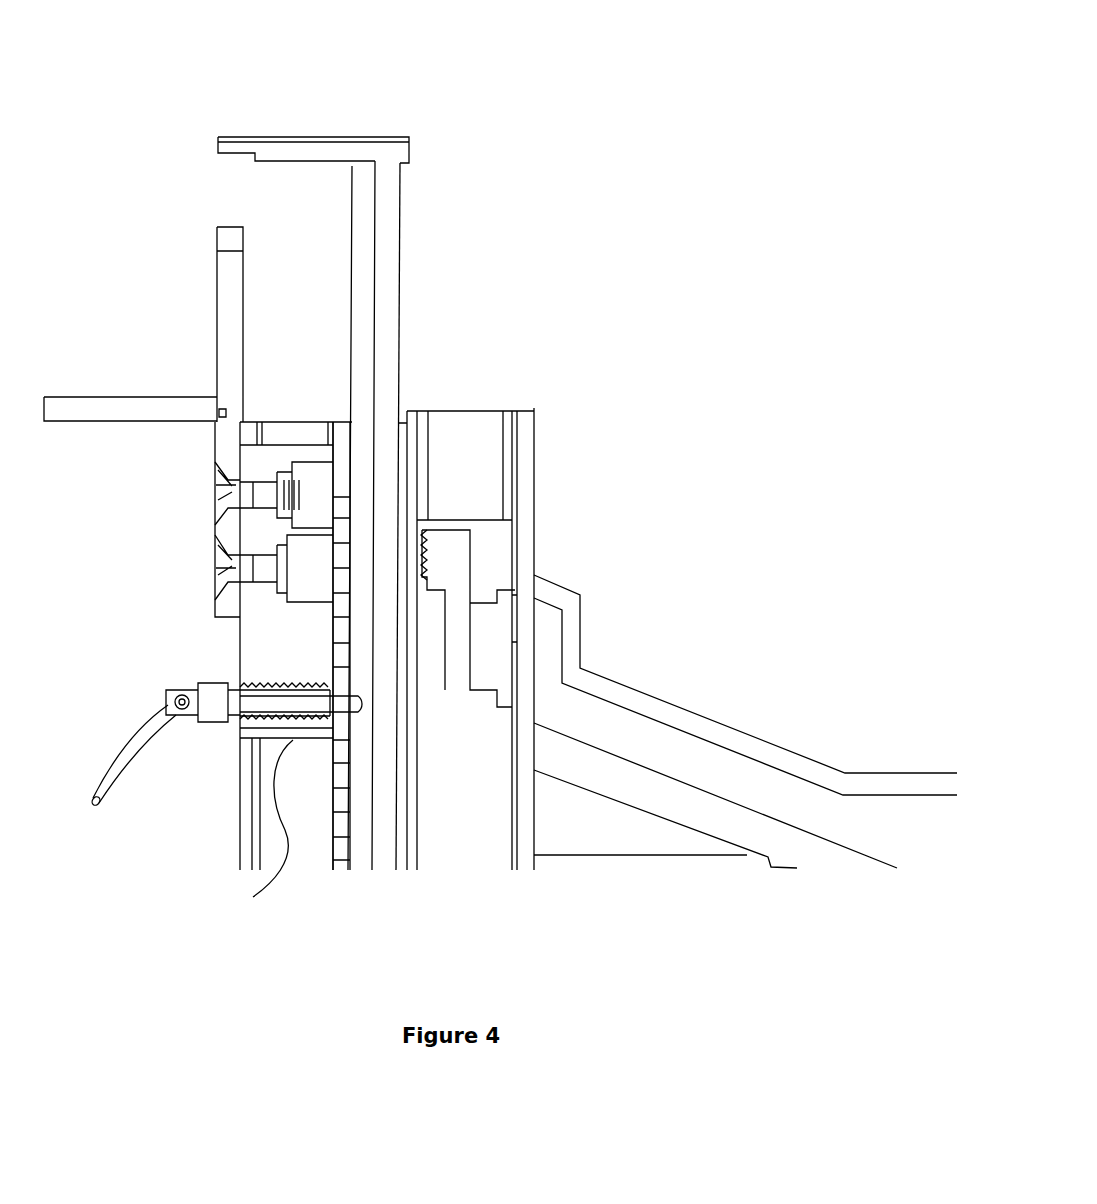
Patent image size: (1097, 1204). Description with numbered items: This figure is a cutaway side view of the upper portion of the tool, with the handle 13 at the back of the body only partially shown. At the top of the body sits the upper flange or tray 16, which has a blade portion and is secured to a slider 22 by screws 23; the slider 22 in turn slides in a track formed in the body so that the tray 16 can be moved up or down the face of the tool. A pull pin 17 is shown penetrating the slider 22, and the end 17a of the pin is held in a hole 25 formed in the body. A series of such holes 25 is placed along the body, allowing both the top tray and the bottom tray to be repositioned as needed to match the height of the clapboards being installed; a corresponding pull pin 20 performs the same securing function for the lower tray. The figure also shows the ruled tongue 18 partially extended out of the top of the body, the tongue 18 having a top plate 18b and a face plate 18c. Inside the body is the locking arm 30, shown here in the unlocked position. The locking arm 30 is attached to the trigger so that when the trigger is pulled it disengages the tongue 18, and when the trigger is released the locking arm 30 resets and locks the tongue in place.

The handle 13 is at (630, 682).
The tray 16 is at (195, 340).
The pull pin 17 is at (130, 757).
The end 17a is at (352, 703).
The ruled tongue 18 is at (440, 515).
The top plate 18b is at (335, 132).
The face plate 18c is at (403, 198).
The pull pin 20 is at (647, 380).
The slider 22 is at (261, 834).
The screws 23 is at (205, 565).
The hole 25 is at (338, 830).
The locking arm 30 is at (445, 568).